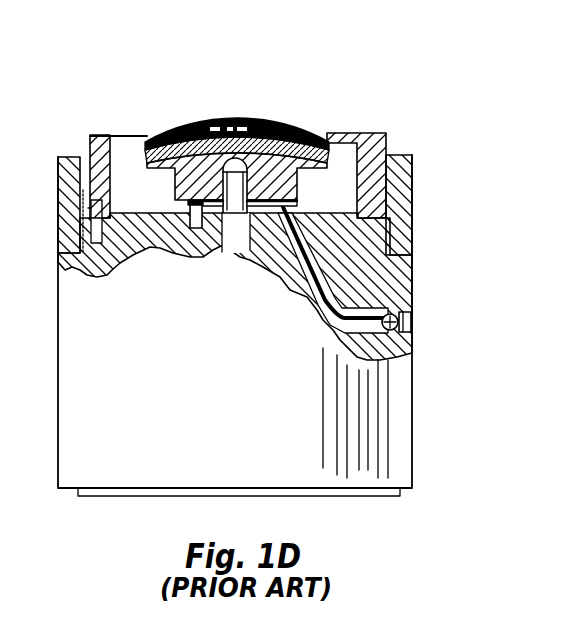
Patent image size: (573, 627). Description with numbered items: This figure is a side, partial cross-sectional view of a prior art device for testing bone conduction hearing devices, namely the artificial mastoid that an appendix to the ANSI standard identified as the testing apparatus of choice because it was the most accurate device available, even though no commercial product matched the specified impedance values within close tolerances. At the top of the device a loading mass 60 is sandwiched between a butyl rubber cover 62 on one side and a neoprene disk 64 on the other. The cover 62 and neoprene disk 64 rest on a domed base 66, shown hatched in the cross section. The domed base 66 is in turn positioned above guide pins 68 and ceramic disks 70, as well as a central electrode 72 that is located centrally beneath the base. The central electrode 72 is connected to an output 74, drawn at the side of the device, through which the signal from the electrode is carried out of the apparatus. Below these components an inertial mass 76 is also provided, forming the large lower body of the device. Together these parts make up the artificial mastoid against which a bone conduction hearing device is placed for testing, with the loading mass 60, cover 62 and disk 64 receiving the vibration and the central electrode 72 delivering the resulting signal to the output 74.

The loading mass 60 is at (237, 118).
The butyl rubber cover 62 is at (270, 118).
The neoprene disk 64 is at (200, 121).
The domed base 66 is at (303, 127).
The guide pins 68 is at (190, 200).
The ceramic disks 70 is at (176, 212).
The central electrode 72 is at (297, 203).
The output 74 is at (411, 314).
The inertial mass 76 is at (413, 452).